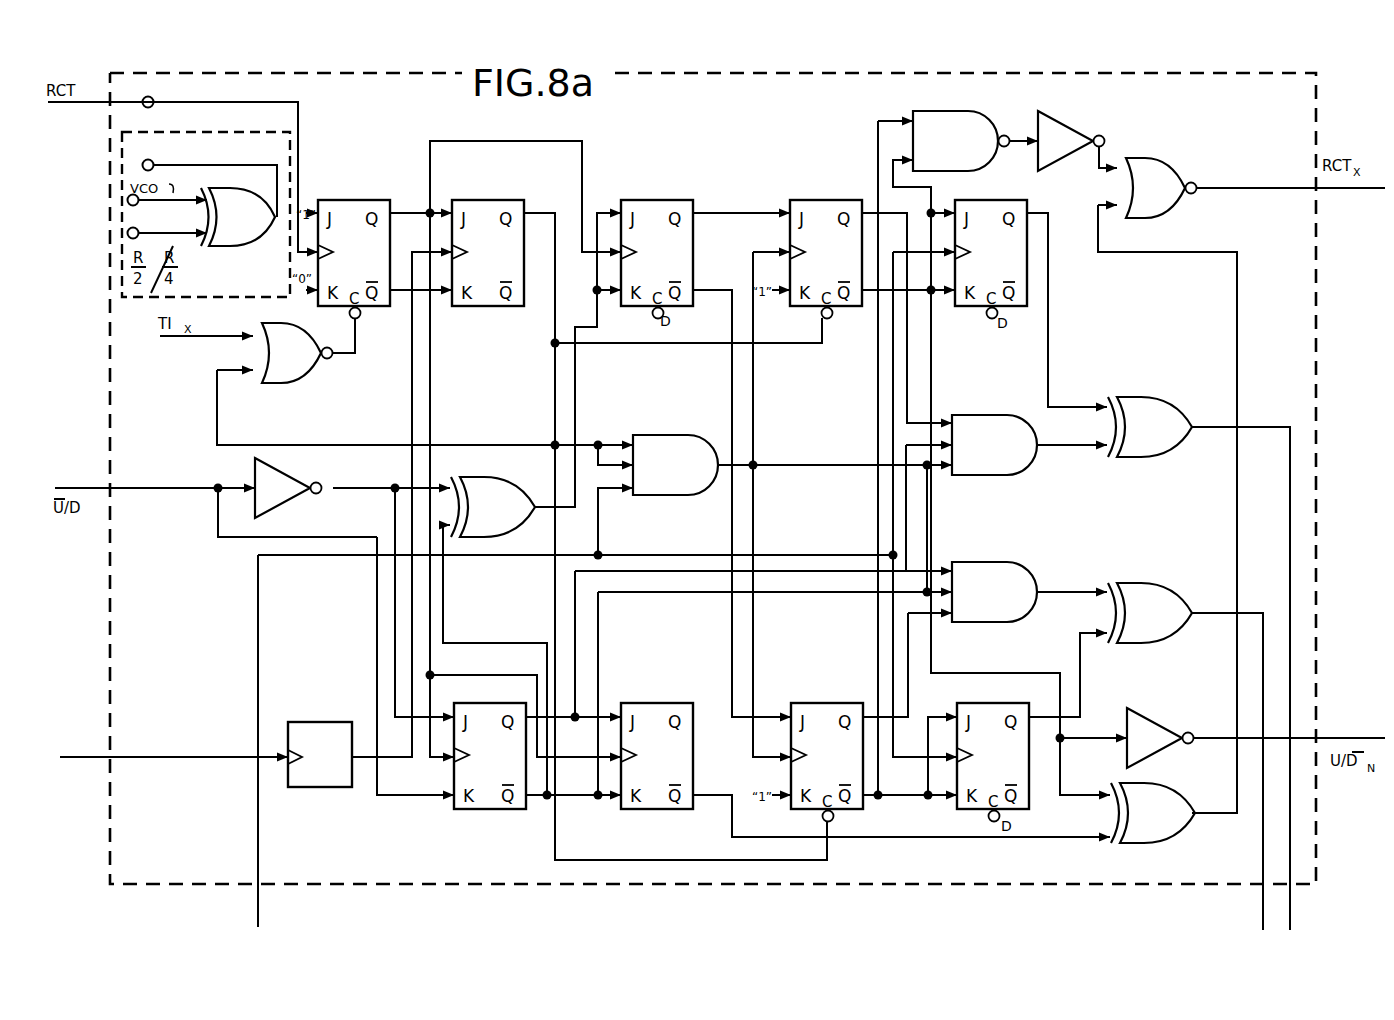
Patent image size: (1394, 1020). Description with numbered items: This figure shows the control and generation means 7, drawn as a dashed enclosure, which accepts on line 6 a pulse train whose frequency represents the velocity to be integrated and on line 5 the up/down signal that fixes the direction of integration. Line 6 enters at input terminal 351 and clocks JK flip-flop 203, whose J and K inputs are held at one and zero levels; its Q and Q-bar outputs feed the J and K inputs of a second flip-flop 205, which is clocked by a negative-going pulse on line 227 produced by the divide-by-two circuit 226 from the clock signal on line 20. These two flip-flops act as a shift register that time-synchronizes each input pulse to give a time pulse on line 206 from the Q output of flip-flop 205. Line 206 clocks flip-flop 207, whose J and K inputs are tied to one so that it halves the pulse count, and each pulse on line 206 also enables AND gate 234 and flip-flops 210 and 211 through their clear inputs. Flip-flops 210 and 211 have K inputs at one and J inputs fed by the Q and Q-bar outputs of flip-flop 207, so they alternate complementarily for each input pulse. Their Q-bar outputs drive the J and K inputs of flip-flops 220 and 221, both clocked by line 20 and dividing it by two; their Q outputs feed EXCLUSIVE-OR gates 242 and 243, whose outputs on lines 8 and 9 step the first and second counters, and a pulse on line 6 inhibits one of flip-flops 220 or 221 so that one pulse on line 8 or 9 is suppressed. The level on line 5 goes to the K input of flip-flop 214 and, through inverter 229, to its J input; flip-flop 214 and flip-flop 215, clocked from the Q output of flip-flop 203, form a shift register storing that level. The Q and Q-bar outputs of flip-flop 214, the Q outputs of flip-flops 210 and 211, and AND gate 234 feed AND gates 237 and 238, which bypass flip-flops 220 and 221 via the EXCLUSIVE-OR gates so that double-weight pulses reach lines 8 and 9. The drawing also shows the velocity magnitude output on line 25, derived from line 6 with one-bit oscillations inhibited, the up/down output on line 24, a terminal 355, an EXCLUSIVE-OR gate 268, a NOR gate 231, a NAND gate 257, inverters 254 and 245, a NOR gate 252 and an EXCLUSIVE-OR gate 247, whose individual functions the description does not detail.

The control and generation means 7 is at (1316, 83).
The RCT input terminal 351 is at (153, 100).
The line 6 is at (85, 104).
The clock selection input terminal 355 is at (153, 163).
The JK flip-flop 203 is at (353, 200).
The second flip-flop 205 is at (489, 200).
The line 206 is at (566, 185).
The flip-flop 207 is at (659, 198).
The JK flip-flop 210 is at (814, 200).
The flip-flop 220 is at (995, 188).
The NAND gate 257 is at (952, 112).
The inverter 254 is at (1082, 103).
The NOR gate 252 is at (1170, 152).
The line 25 is at (1337, 193).
The NOR gate 231 is at (290, 384).
The inverter 229 is at (290, 478).
The line 5 is at (76, 485).
The exclusive-OR gate 268 is at (482, 482).
The AND gate 234 is at (662, 496).
The AND gate 237 is at (996, 395).
The EXCLUSIVE-OR gate 242 is at (1153, 378).
The line 8 is at (1254, 425).
The AND gate 238 is at (1014, 552).
The EXCLUSIVE-OR gate 243 is at (1170, 562).
The line 9 is at (1242, 612).
The divide by 2 circuit 226 is at (327, 720).
The line 227 is at (386, 760).
The JK flip-flop 214 is at (466, 810).
The JK flip-flop 215 is at (633, 810).
The flip-flop 211 is at (833, 704).
The flip-flop 221 is at (995, 703).
The inverter 245 is at (1134, 710).
The line 24 is at (1355, 736).
The exclusive-OR gate 247 is at (1170, 843).
The line 20 is at (95, 748).